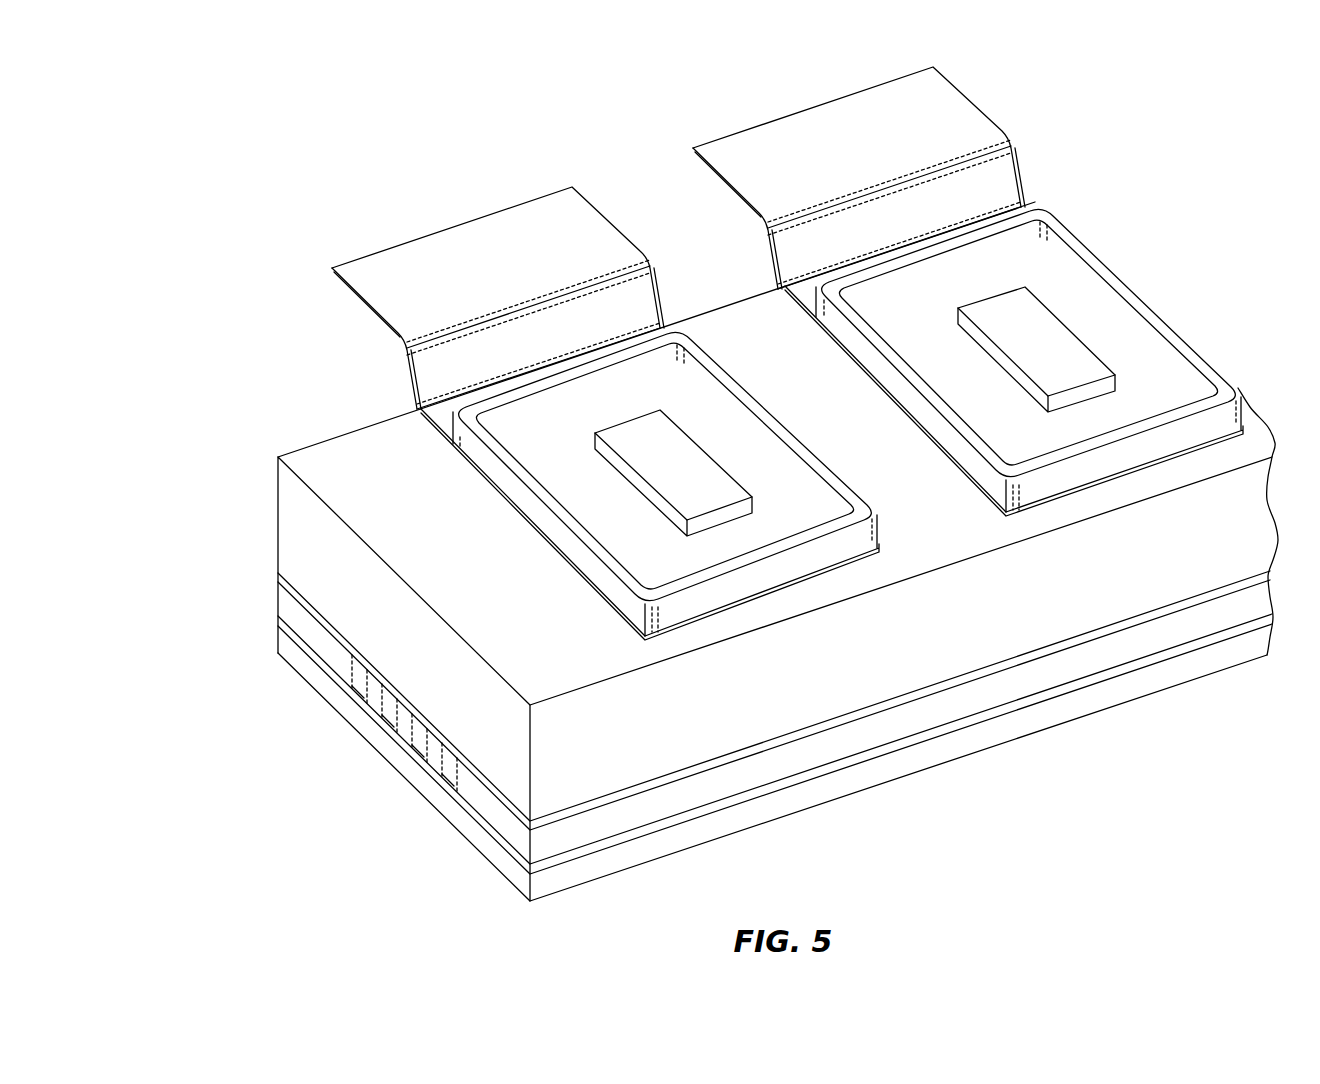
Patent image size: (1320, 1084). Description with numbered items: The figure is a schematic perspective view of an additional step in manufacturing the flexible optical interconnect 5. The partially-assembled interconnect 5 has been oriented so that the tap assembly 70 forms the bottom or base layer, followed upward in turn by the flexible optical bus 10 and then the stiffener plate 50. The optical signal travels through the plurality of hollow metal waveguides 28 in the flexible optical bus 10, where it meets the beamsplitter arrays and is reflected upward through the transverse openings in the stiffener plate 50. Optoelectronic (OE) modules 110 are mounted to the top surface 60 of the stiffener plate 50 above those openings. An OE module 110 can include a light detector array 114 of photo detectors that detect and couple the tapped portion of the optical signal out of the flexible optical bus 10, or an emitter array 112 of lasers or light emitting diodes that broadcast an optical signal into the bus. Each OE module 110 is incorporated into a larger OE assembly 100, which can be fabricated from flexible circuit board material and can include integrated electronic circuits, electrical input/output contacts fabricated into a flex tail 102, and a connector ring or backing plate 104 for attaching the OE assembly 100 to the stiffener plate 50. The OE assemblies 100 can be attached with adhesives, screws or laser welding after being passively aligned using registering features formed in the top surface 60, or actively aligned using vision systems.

The flexible optical interconnect 5 is at (200, 256).
The flexible optical bus 10 is at (290, 603).
The hollow metal waveguides 28 is at (392, 707).
The stiffener plate 50 is at (295, 518).
The top surface 60 is at (935, 530).
The tap assembly 70 is at (497, 848).
The OE assembly 100 is at (1102, 273).
The flex tail 102 is at (461, 256).
The connector ring or backing plate 104 is at (665, 332).
The optoelectronic (OE) module 110 is at (708, 492).
The emitter array 112 is at (645, 452).
The light detector array 114 is at (1050, 343).